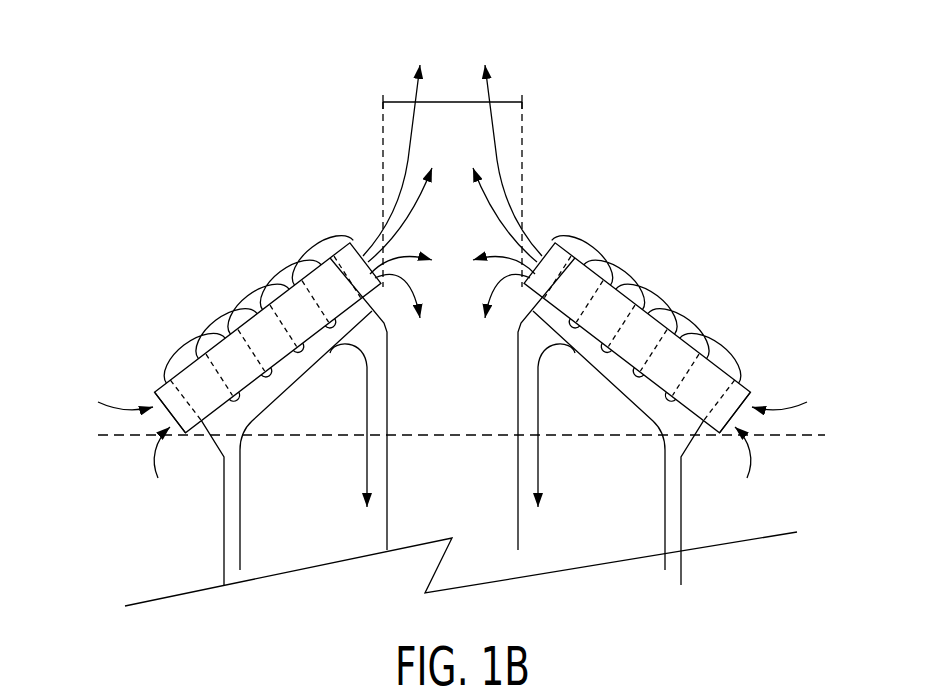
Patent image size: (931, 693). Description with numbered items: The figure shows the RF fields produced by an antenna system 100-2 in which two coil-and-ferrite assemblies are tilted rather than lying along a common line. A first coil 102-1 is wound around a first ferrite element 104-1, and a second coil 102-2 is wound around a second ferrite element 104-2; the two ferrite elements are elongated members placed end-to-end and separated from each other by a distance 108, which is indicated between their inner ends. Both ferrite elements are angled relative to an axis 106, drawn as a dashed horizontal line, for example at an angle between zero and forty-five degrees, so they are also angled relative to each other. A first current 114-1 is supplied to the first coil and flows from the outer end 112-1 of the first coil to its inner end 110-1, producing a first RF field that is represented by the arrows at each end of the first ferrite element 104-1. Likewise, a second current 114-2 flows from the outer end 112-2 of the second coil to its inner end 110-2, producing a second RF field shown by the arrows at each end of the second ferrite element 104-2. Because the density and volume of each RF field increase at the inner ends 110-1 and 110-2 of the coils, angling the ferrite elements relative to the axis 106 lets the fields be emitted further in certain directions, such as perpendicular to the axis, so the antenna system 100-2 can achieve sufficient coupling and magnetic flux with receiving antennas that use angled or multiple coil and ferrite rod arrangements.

The antenna system 100-2 is at (95, 104).
The first coil 102-1 is at (203, 322).
The second coil 102-2 is at (643, 271).
The first ferrite element 104-1 is at (154, 391).
The second ferrite element 104-2 is at (553, 243).
The axis 106 is at (818, 433).
The distance 108 is at (397, 98).
The inner end of the first coil 110-1 is at (315, 230).
The inner end of the second coil 110-2 is at (600, 240).
The outer end of the first coil 112-1 is at (153, 362).
The outer end of the second coil 112-2 is at (748, 356).
The first current 114-1 is at (240, 540).
The second current 114-2 is at (665, 540).